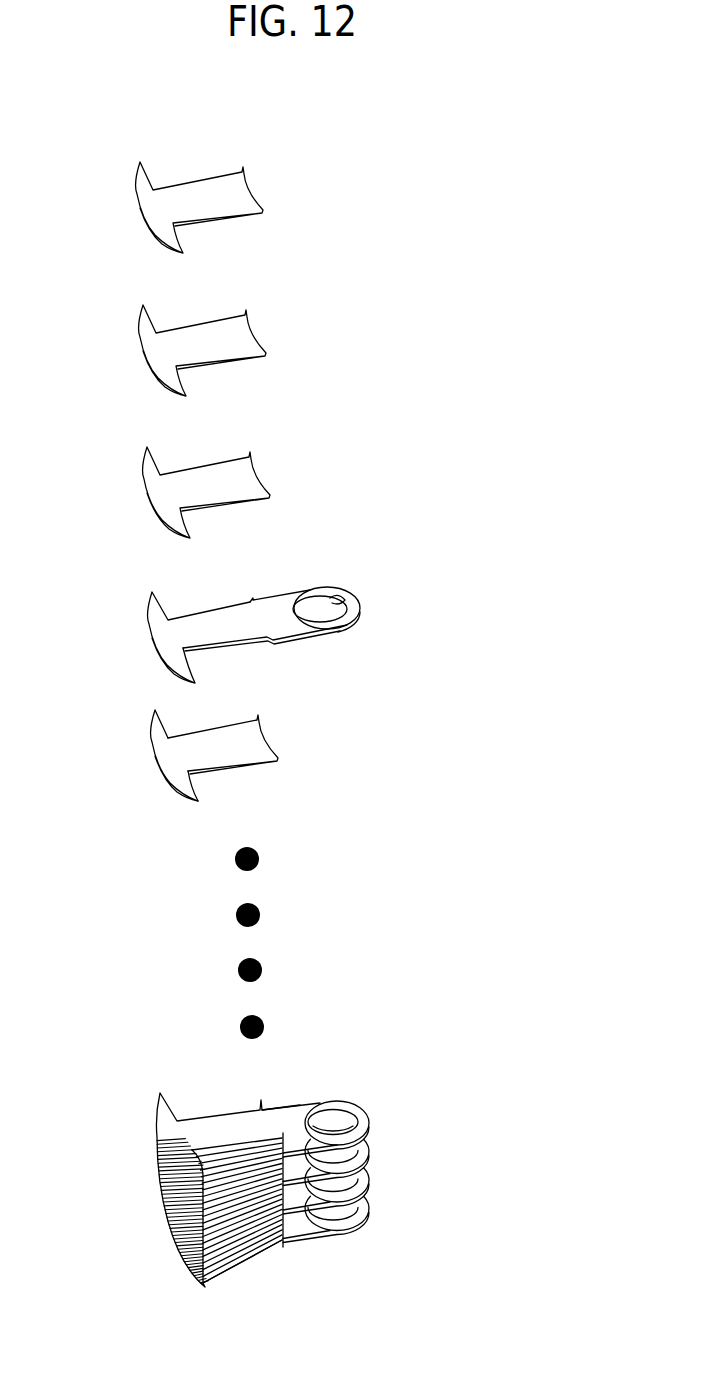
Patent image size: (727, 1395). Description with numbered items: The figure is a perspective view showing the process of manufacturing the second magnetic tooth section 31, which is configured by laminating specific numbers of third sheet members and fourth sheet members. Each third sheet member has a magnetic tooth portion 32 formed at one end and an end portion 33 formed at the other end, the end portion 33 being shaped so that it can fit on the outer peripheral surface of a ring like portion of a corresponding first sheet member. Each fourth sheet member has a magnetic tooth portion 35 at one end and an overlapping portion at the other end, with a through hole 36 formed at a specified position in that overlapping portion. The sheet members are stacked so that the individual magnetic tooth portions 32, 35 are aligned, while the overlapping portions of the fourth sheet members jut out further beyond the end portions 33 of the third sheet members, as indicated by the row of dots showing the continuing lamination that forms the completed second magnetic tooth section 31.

The second magnetic tooth section 31 is at (240, 1178).
The magnetic tooth portion 32 is at (212, 773).
The end portion 33 is at (253, 745).
The magnetic tooth portion 35 is at (248, 608).
The through hole 36 is at (343, 602).